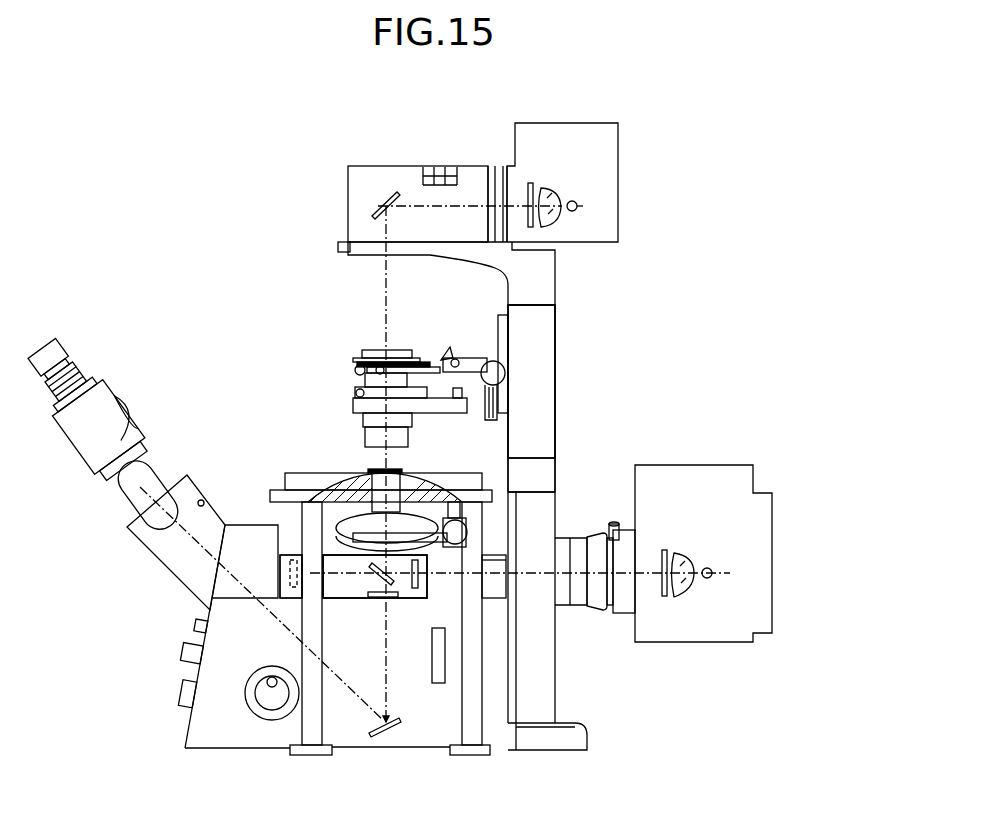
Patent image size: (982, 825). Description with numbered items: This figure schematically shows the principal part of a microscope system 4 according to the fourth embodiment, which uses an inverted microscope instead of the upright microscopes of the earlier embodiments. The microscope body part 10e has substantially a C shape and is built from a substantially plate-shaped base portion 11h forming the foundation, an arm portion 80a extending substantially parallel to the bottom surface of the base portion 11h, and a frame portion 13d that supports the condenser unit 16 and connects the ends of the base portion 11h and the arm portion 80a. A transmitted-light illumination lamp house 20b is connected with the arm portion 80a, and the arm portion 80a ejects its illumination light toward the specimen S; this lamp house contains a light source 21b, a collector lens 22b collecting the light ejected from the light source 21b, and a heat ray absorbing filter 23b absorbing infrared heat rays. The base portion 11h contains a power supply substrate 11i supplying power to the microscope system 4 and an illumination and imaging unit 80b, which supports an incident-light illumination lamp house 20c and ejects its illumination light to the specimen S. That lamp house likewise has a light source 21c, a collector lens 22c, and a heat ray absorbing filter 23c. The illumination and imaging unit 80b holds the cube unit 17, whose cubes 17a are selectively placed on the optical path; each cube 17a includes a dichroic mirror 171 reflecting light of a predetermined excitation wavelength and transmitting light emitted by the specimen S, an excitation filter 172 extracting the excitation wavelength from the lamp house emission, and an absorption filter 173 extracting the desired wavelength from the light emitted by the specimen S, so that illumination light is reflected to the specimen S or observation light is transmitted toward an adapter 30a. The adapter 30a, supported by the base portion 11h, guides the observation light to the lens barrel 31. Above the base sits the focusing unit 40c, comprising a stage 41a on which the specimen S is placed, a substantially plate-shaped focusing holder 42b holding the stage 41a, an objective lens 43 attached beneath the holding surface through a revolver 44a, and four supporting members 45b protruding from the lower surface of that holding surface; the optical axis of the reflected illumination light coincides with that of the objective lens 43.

The microscope system 4 is at (345, 124).
The arm portion 80a is at (397, 175).
The transmitted-light illumination lamp house 20b is at (607, 135).
The heat ray absorbing filter 23b is at (535, 187).
The light source 21b is at (577, 201).
The collector lens 22b is at (562, 216).
The microscope body part 10e is at (600, 309).
The frame portion 13d is at (545, 364).
The condenser unit 16 is at (338, 369).
The lens barrel 31 is at (113, 405).
The focusing holder 42b is at (278, 488).
The focusing unit 40c is at (288, 455).
The stage 41a is at (315, 472).
The objective lens 43 is at (399, 478).
The revolver 44a is at (422, 522).
The specimen S is at (375, 471).
The cube 17a is at (287, 540).
The adapter 30a is at (168, 560).
The cube unit 17 is at (345, 604).
The base portion 11h is at (203, 720).
The supporting member 45b is at (302, 727).
The dichroic mirror 171 is at (365, 602).
The absorption filter 173 is at (397, 603).
The power supply substrate 11i is at (437, 680).
The illumination and imaging unit 80b is at (420, 580).
The excitation filter 172 is at (430, 585).
The incident-light illumination lamp house 20c is at (772, 510).
The heat ray absorbing filter 23c is at (668, 558).
The light source 21c is at (711, 571).
The collector lens 22c is at (694, 583).